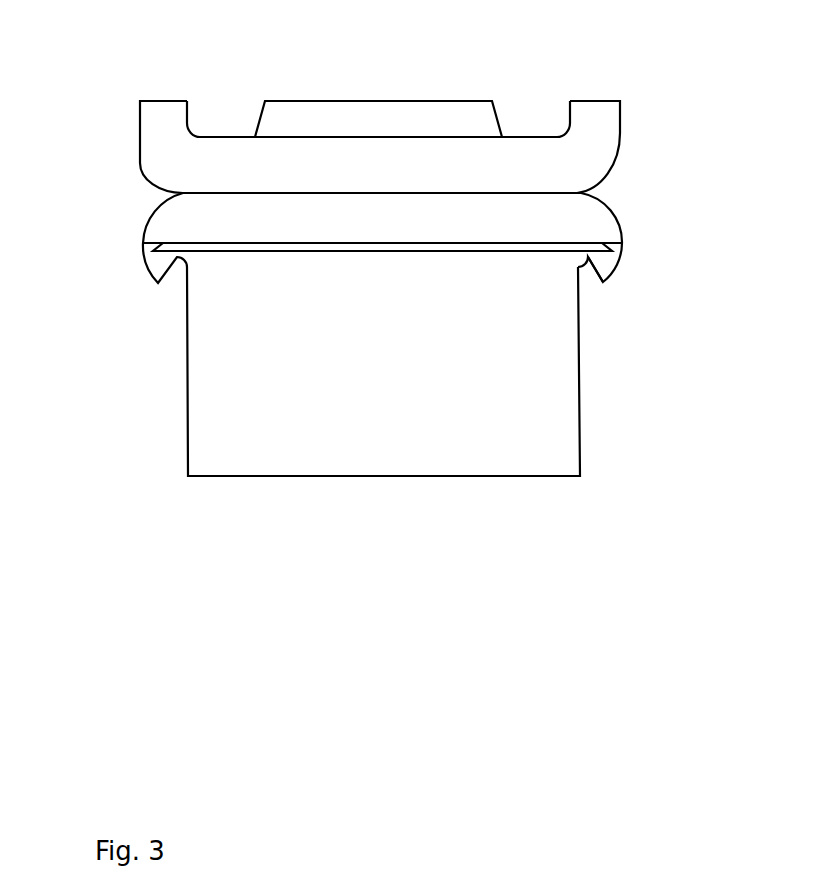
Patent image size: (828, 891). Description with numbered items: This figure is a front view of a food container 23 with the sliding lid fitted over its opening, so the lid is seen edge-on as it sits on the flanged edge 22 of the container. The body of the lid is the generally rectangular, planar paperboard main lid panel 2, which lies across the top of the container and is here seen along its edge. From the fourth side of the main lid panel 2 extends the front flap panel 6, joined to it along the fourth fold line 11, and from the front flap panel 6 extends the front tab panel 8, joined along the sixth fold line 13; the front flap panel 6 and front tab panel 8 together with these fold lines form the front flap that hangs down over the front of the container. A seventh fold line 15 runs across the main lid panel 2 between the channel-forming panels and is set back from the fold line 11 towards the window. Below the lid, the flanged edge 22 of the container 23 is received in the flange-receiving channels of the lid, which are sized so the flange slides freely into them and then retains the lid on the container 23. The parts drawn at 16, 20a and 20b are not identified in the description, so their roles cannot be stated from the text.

The main lid panel 2 is at (369, 222).
The front flap panel 6 is at (593, 152).
The front tab panel 8 is at (308, 113).
The fourth fold line 11 is at (475, 190).
The sixth fold line 13 is at (423, 133).
The seventh fold line 15 is at (140, 162).
The sealing disc 16 is at (245, 240).
The left retaining hook 20a is at (163, 257).
The right retaining hook 20b is at (617, 266).
The flanged edge 22 is at (599, 250).
The food container 23 is at (187, 380).